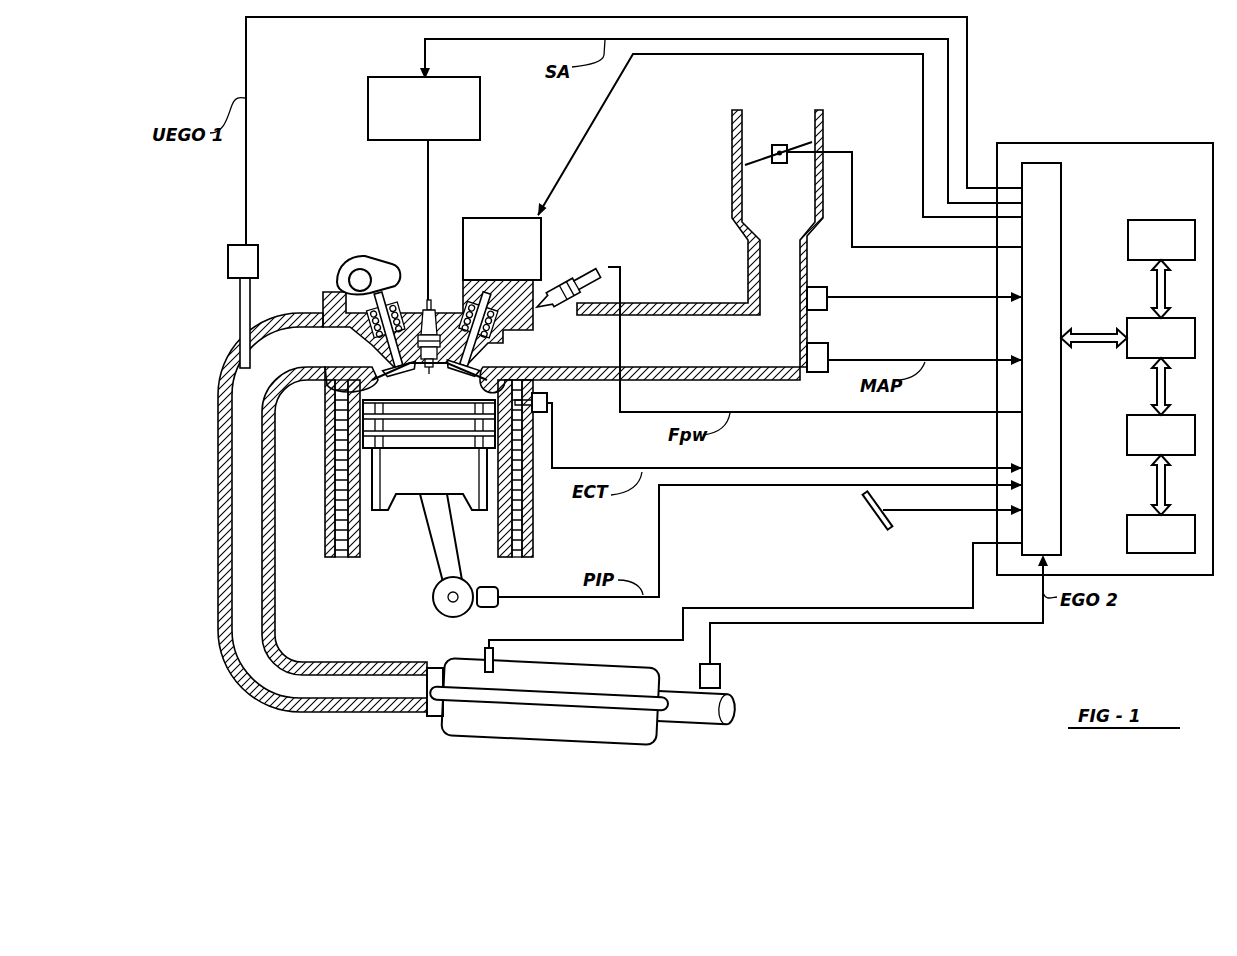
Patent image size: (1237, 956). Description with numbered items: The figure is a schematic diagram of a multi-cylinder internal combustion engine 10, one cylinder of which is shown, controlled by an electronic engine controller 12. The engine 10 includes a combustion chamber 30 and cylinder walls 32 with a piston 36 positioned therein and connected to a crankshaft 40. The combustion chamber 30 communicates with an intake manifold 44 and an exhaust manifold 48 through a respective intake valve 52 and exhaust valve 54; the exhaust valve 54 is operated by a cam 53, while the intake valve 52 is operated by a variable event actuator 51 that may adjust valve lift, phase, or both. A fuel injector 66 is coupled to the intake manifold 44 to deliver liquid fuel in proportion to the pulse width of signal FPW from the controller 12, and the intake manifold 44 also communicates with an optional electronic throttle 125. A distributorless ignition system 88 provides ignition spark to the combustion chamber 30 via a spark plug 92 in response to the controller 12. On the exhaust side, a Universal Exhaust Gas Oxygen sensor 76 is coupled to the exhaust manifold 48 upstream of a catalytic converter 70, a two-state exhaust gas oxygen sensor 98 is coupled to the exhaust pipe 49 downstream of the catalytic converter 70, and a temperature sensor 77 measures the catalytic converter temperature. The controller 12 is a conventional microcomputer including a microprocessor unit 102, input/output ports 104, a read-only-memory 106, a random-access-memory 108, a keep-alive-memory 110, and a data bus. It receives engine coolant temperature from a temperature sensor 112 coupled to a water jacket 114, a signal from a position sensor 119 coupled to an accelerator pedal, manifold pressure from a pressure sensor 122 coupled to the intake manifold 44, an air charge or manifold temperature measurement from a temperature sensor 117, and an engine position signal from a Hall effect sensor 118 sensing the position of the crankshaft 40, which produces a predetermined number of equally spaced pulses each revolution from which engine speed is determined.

The internal combustion engine 10 is at (320, 290).
The electronic engine controller 12 is at (1097, 143).
The combustion chamber 30 is at (428, 383).
The cylinder walls 32 is at (370, 545).
The piston 36 is at (420, 483).
The crankshaft 40 is at (433, 600).
The intake manifold 44 is at (745, 352).
The exhaust manifold 48 is at (243, 407).
The exhaust pipe 49 is at (683, 722).
The variable event actuator 51 is at (497, 217).
The intake valve 52 is at (483, 357).
The cam 53 is at (348, 252).
The exhaust valve 54 is at (382, 362).
The fuel injector 66 is at (562, 272).
The catalytic converter 70 is at (596, 715).
The Universal Exhaust Gas Oxygen sensor 76 is at (228, 255).
The temperature sensor 77 is at (483, 662).
The distributorless ignition system 88 is at (481, 110).
The spark plug 92 is at (430, 290).
The two-state exhaust gas oxygen sensor 98 is at (733, 668).
The microprocessor unit 102 is at (1135, 317).
The input/output ports 104 is at (1063, 185).
The read-only-memory 106 is at (1165, 218).
The random-access-memory 108 is at (1135, 414).
The keep-alive-memory 110 is at (1135, 514).
The temperature sensor 112 is at (545, 395).
The water jacket 114 is at (342, 557).
The temperature sensor 117 is at (829, 286).
The Hall effect sensor 118 is at (493, 605).
The position sensor 119 is at (865, 525).
The pressure sensor 122 is at (830, 350).
The electronic throttle 125 is at (770, 138).